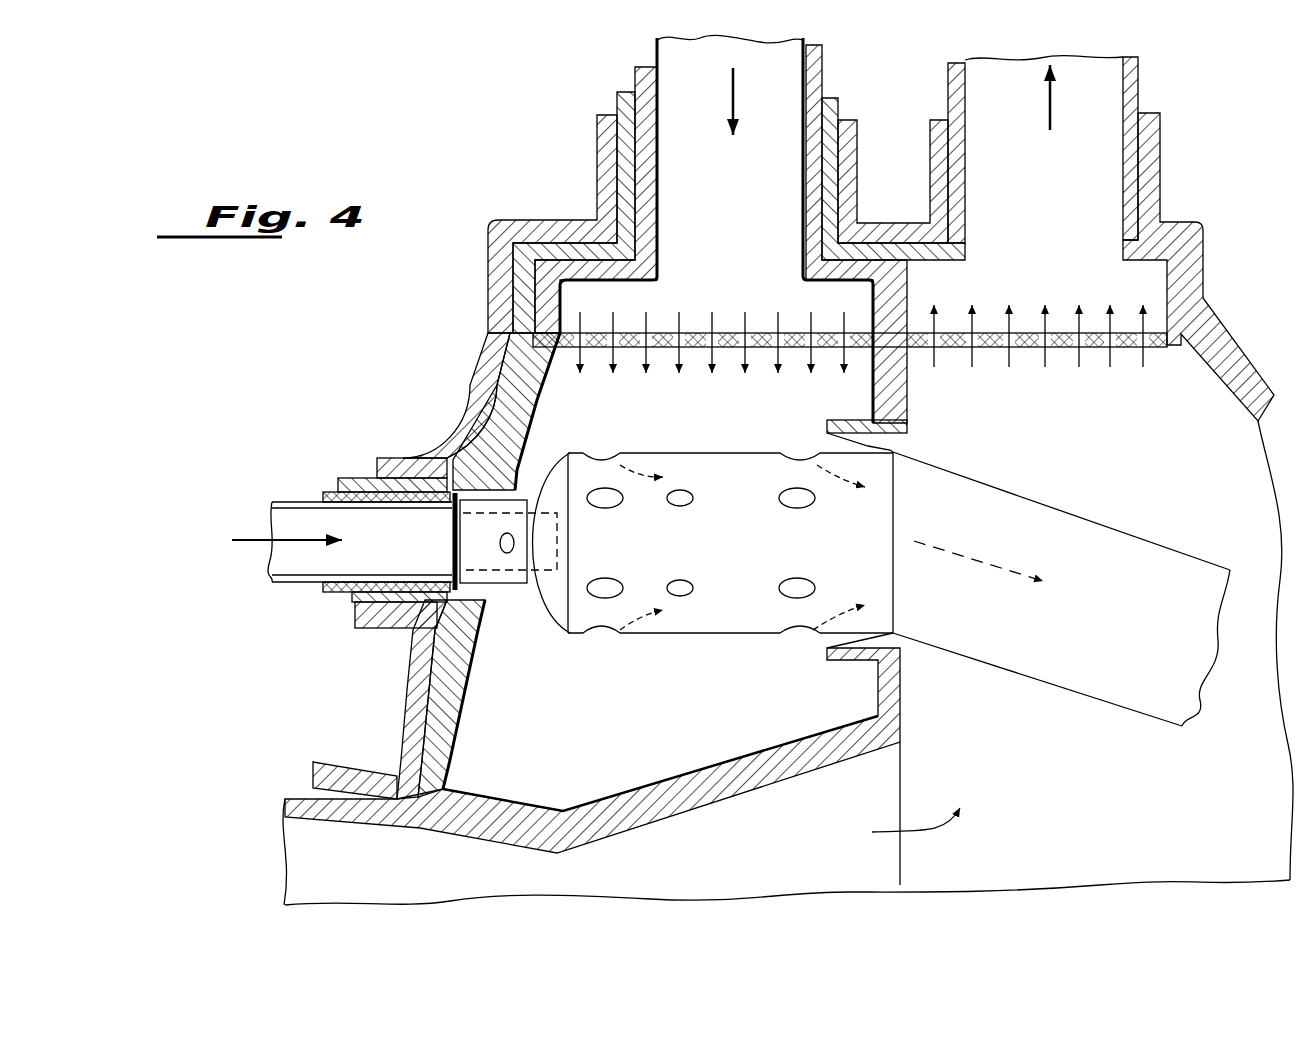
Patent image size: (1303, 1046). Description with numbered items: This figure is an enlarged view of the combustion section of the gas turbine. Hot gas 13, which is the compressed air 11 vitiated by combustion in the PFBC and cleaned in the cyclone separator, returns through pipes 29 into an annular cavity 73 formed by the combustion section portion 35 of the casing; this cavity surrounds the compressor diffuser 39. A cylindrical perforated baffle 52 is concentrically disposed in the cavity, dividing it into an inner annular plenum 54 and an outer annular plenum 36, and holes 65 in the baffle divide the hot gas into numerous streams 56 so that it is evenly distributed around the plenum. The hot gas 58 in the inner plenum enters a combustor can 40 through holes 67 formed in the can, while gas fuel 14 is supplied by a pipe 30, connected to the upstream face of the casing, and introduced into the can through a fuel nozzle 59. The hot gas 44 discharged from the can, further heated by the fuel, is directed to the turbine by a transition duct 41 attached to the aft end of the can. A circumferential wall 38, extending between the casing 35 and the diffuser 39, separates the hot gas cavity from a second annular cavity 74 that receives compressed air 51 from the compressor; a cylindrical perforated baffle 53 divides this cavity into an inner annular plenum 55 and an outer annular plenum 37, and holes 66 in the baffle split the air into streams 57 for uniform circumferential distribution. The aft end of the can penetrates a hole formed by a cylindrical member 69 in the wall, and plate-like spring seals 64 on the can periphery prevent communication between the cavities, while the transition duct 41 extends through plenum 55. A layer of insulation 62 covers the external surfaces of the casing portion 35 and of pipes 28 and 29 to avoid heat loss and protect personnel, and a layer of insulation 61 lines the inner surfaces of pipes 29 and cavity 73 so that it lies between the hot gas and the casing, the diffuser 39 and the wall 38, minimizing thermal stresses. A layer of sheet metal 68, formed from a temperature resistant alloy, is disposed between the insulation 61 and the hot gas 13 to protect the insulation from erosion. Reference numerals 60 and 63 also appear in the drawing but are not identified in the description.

The layer of sheet metal 68 is at (655, 50).
The layer of insulation 61 is at (633, 73).
The pipes 29 is at (622, 97).
The layer of insulation 62 is at (603, 160).
The hot gas 13 is at (738, 80).
The streams 56 is at (717, 332).
The outer annular plenum 36 is at (683, 313).
The holes 65 is at (812, 332).
The outer annular plenum 37 is at (1018, 291).
The pipes 28 is at (1138, 96).
The compressed air 11 is at (1050, 132).
The annular cavity 74 is at (1185, 290).
The annular cavity 73 is at (573, 307).
The combustion section portion of the casing 35 is at (495, 410).
The flange 60 is at (400, 462).
The pipes 30 is at (350, 482).
The hot gas 58 is at (605, 457).
The cylindrical perforated baffle 52 is at (733, 352).
The cylindrical members 69 is at (850, 417).
The circumferential wall 38 is at (902, 395).
The streams 57 is at (1039, 363).
The cylindrical perforated baffle 53 is at (1097, 352).
The holes 66 is at (1141, 352).
The plate-like spring seals 64 is at (880, 445).
The gas fuel 14 is at (243, 541).
The transition duct 41 is at (1045, 512).
The inner annular plenum 55 is at (1152, 476).
The fuel pipe 63 is at (288, 585).
The holes 67 is at (673, 502).
The fuel nozzles 59 is at (550, 572).
The hot gas 44 is at (1000, 568).
The combustor can 40 is at (720, 625).
The inner annular plenum 54 is at (600, 750).
The compressor diffuser 39 is at (740, 788).
The compressed air 51 is at (936, 831).